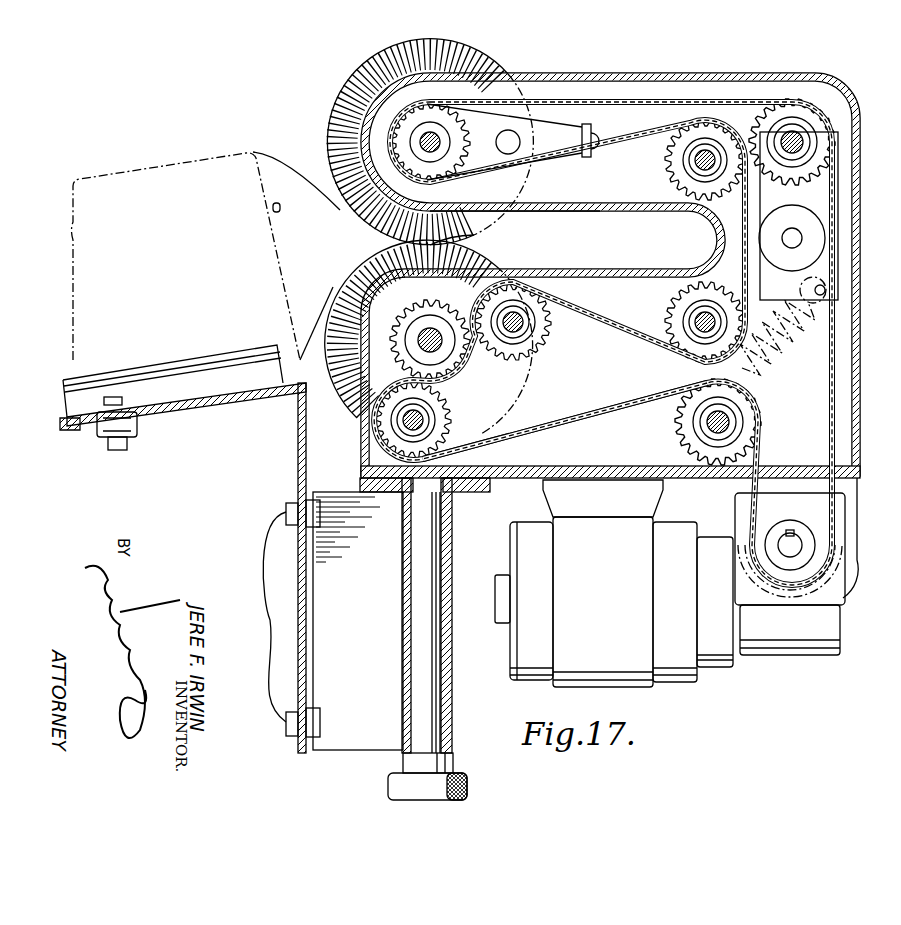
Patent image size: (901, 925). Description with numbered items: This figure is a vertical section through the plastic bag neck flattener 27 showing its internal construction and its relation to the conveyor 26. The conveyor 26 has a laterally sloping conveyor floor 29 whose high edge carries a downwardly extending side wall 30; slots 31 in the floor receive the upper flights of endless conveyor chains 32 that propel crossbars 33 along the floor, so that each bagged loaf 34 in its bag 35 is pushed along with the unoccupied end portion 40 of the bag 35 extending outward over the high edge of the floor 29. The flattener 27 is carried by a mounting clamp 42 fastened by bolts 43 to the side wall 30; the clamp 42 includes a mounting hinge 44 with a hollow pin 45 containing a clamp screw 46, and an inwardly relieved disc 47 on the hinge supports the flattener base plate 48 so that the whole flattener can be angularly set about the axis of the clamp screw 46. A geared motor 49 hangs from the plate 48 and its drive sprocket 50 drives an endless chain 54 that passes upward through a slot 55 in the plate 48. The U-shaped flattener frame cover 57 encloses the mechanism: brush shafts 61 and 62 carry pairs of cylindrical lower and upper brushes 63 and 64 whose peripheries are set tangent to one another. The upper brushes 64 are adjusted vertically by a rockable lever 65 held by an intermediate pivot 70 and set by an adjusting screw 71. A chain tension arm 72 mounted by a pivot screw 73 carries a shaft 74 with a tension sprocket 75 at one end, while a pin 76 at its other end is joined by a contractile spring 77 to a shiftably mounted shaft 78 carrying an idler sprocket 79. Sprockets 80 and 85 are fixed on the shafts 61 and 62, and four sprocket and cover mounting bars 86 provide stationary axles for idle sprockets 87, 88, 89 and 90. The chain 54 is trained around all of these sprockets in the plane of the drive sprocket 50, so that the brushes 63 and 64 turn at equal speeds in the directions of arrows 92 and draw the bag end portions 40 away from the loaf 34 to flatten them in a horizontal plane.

The conveyor 26 is at (116, 441).
The plastic bag neck flattener 27 is at (589, 141).
The conveyor floor 29 is at (215, 402).
The side wall 30 is at (298, 448).
The slots 31 is at (145, 412).
The endless conveyor chains 32 is at (138, 430).
The crossbars 33 is at (168, 358).
The bagged loaf 34 is at (272, 208).
The bag 35 is at (172, 162).
The unoccupied end portion of bag 40 is at (480, 240).
The mounting clamp 42 is at (340, 752).
The bolts 43 is at (270, 606).
The mounting hinge 44 is at (455, 707).
The hollow pin 45 is at (437, 660).
The clamp screw 46 is at (455, 765).
The inwardly relieved disc 47 is at (472, 490).
The flattener base plate 48 is at (520, 480).
The geared motor 49 is at (632, 573).
The drive sprocket 50 is at (800, 503).
The endless chain 54 is at (583, 412).
The slot 55 is at (845, 470).
The flattener frame cover 57 is at (648, 73).
The brush shaft 61 is at (440, 348).
The brush shaft 62 is at (428, 144).
The lower brushes 63 is at (340, 298).
The upper brushes 64 is at (378, 62).
The rockable lever 65 is at (565, 168).
The intermediate pivot 70 is at (509, 80).
The adjusting screw 71 is at (596, 136).
The chain tension arm 72 is at (825, 212).
The pivot screw 73 is at (796, 232).
The pin 76 is at (800, 290).
The contractile spring 77 is at (782, 373).
The shaft 74 is at (800, 135).
The tension sprocket 75 is at (795, 118).
The shiftably mounted shaft 78 is at (705, 422).
The idler sprocket 79 is at (698, 422).
The sprocket 80 is at (442, 331).
The sprocket 85 is at (504, 133).
The sprocket and cover mounting bars 86 is at (560, 289).
The idle sprocket 87 is at (676, 188).
The idle sprocket 88 is at (668, 298).
The idle sprocket 89 is at (552, 328).
The idle sprocket 90 is at (453, 430).
The arrows 92 is at (398, 262).